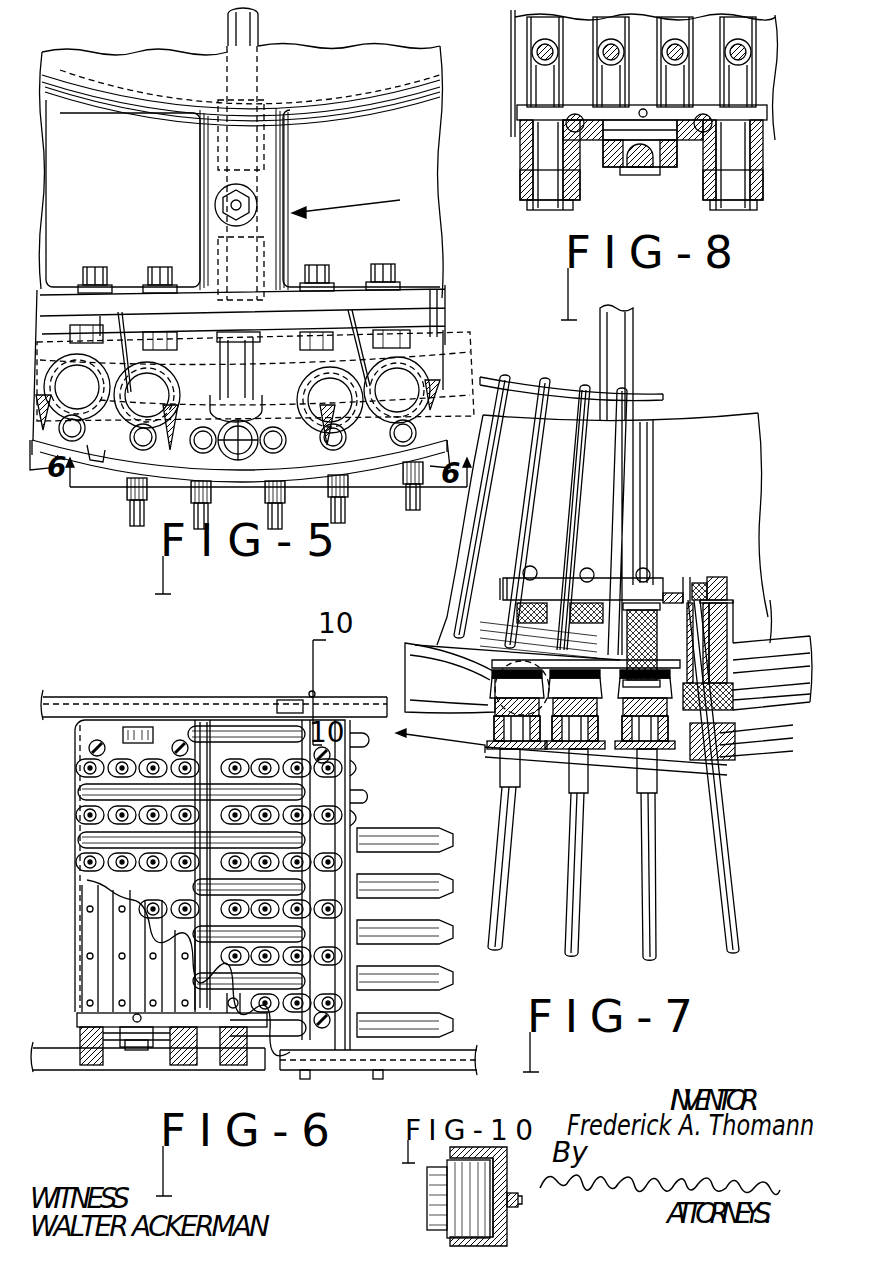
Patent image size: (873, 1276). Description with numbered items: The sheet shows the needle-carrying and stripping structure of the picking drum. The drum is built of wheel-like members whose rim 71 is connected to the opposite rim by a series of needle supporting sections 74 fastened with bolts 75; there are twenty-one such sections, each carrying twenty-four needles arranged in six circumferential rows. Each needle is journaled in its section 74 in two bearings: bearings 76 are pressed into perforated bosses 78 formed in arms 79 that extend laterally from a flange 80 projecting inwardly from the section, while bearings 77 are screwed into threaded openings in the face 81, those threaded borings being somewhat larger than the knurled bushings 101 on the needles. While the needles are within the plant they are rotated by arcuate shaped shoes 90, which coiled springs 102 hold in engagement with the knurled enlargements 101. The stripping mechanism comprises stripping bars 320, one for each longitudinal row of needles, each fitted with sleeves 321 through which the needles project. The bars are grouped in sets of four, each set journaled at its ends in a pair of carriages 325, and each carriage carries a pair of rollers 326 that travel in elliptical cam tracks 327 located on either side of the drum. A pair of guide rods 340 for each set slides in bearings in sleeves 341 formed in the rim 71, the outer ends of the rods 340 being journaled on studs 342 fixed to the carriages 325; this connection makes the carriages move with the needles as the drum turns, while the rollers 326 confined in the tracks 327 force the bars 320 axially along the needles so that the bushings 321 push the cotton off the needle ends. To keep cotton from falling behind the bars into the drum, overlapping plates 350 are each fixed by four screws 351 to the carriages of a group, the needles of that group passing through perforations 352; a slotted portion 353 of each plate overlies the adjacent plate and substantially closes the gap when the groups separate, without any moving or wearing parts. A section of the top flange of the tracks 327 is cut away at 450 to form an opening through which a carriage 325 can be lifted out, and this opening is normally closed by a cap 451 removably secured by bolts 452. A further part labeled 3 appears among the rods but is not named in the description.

In FIG. 7, the rod 3 is at (717, 848).
In FIG. 5, the rim 71 is at (100, 117).
In FIG. 5, the needle supporting section 74 is at (275, 322).
In FIG. 7, the needle supporting section 74 is at (666, 586).
In FIG. 5, the bolts 75 is at (158, 272).
In FIG. 7, the bearings 76 is at (708, 582).
In FIG. 7, the bearings 77 is at (740, 703).
In FIG. 7, the perforated bosses 78 is at (725, 580).
In FIG. 7, the arms 79 is at (730, 587).
In FIG. 7, the flange 80 is at (672, 645).
In FIG. 7, the face 81 is at (698, 762).
In FIG. 7, the arcuate shaped shoes 90 is at (477, 617).
In FIG. 7, the knurled bushings 101 is at (600, 600).
In FIG. 7, the coiled springs 102 is at (527, 525).
In FIG. 8, the stripping bars 320 is at (657, 34).
In FIG. 7, the stripping bars 320 is at (735, 748).
In FIG. 6, the stripping bars 320 is at (120, 978).
In FIG. 7, the sleeves 321 is at (587, 792).
In FIG. 5, the carriages 325 is at (130, 478).
In FIG. 8, the carriages 325 is at (595, 162).
In FIG. 7, the carriages 325 is at (612, 733).
In FIG. 6, the carriages 325 is at (120, 1050).
In FIG. 5, the rollers 326 is at (160, 385).
In FIG. 8, the rollers 326 is at (522, 198).
In FIG. 7, the rollers 326 is at (492, 693).
In FIG. 6, the rollers 326 is at (80, 1068).
In FIG. 10, the rollers 326 is at (467, 1190).
In FIG. 5, the cam tracks 327 is at (470, 350).
In FIG. 7, the cam tracks 327 is at (795, 707).
In FIG. 6, the cam tracks 327 is at (177, 708).
In FIG. 10, the cam tracks 327 is at (500, 1233).
In FIG. 5, the guide rods 340 is at (243, 30).
In FIG. 8, the guide rods 340 is at (650, 173).
In FIG. 6, the guide rods 340 is at (148, 1052).
In FIG. 5, the sleeves 341 is at (263, 190).
In FIG. 7, the sleeves 341 is at (636, 487).
In FIG. 5, the studs 342 is at (252, 460).
In FIG. 8, the studs 342 is at (580, 146).
In FIG. 6, the studs 342 is at (140, 1050).
In FIG. 5, the overlapping plates 350 is at (66, 465).
In FIG. 8, the overlapping plates 350 is at (520, 104).
In FIG. 7, the overlapping plates 350 is at (463, 752).
In FIG. 6, the overlapping plates 350 is at (328, 722).
In FIG. 6, the screws 351 is at (97, 743).
In FIG. 6, the perforations 352 is at (80, 767).
In FIG. 5, the slotted portion 353 is at (183, 480).
In FIG. 7, the slotted portion 353 is at (540, 773).
In FIG. 6, the slotted portion 353 is at (250, 720).
In FIG. 6, the opening 450 is at (287, 693).
In FIG. 6, the cap 451 is at (343, 697).
In FIG. 10, the cap 451 is at (500, 1157).
In FIG. 6, the bolts 452 is at (350, 672).
In FIG. 10, the bolts 452 is at (513, 1203).